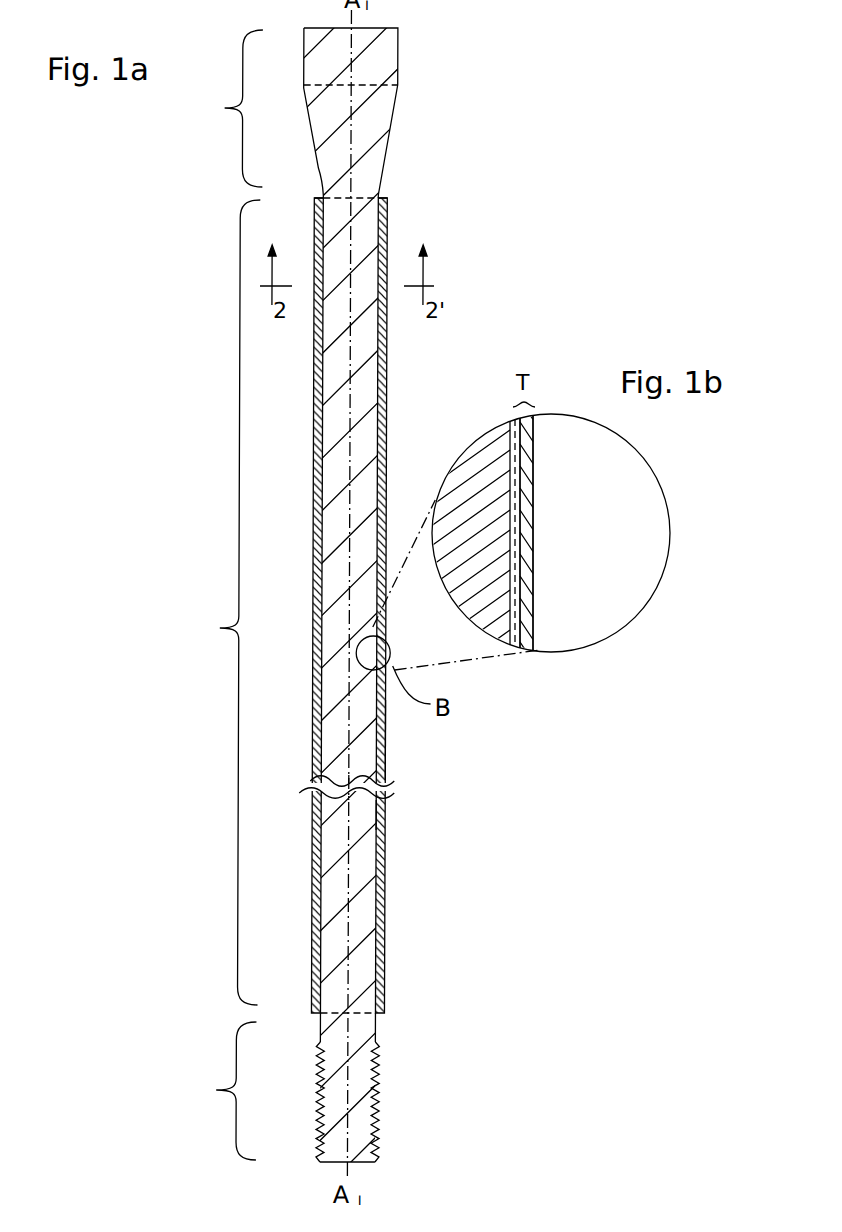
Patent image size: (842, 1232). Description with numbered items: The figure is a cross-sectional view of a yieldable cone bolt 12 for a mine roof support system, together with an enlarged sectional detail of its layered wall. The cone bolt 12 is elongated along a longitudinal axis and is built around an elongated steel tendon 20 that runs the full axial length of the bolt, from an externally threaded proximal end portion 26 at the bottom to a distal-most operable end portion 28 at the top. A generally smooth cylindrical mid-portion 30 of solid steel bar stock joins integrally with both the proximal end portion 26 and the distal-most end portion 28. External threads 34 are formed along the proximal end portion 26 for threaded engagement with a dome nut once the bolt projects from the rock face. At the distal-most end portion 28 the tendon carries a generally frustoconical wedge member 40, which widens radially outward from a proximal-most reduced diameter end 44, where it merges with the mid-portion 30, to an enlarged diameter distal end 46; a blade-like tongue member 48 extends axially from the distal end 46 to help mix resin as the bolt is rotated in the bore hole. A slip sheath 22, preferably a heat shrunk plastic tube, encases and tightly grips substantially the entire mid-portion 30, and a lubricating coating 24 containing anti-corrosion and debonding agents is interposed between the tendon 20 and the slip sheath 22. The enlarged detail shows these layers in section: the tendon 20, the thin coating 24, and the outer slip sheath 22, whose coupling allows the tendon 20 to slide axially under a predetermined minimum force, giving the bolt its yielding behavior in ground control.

In FIG. 1a, the cone bolt 12 is at (357, 880).
In FIG. 1b, the cone bolt 12 is at (490, 573).
In FIG. 1a, the tendon 20 is at (363, 383).
In FIG. 1b, the tendon 20 is at (498, 457).
In FIG. 1a, the slip sheath 22 is at (388, 763).
In FIG. 1b, the slip sheath 22 is at (528, 477).
In FIG. 1a, the lubricating coating 24 is at (380, 810).
In FIG. 1b, the lubricating coating 24 is at (527, 533).
In FIG. 1a, the proximal end portion 26 is at (218, 1091).
In FIG. 1a, the distal-most operable end portion 28 is at (226, 108).
In FIG. 1a, the mid-portion 30 is at (222, 602).
In FIG. 1a, the external threads 34 is at (380, 1080).
In FIG. 1a, the wedge member 40 is at (370, 135).
In FIG. 1a, the proximal-most reduced diameter end 44 is at (386, 195).
In FIG. 1a, the distal end 46 is at (398, 85).
In FIG. 1a, the tongue member 48 is at (377, 53).